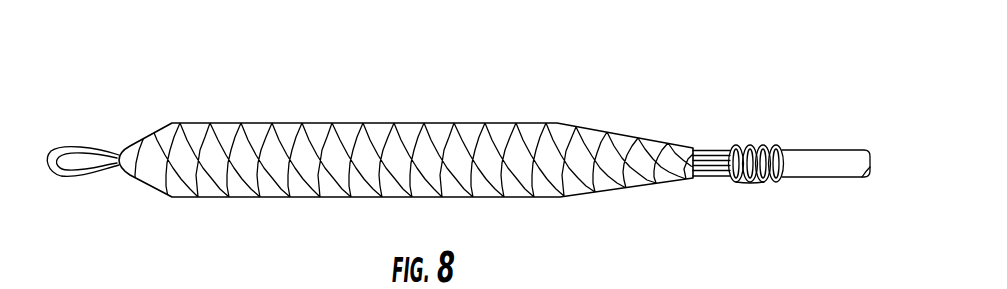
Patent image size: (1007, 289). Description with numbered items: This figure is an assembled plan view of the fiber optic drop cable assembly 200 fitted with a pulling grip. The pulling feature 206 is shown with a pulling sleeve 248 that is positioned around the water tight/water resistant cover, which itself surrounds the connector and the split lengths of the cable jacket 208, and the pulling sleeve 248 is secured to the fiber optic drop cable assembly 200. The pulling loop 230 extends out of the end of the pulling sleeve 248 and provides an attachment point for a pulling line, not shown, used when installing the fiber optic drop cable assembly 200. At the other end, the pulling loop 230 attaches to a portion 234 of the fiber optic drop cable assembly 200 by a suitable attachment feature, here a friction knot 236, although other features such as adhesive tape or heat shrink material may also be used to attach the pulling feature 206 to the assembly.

The fiber optic drop cable assembly 200 is at (393, 84).
The pulling sleeve 248 is at (231, 124).
The pulling loop 230 is at (80, 148).
The pulling feature 206 is at (577, 127).
The portion of the fiber optic drop cable assembly 234 is at (777, 145).
The friction knot 236 is at (743, 186).
The cable jacket 208 is at (812, 178).